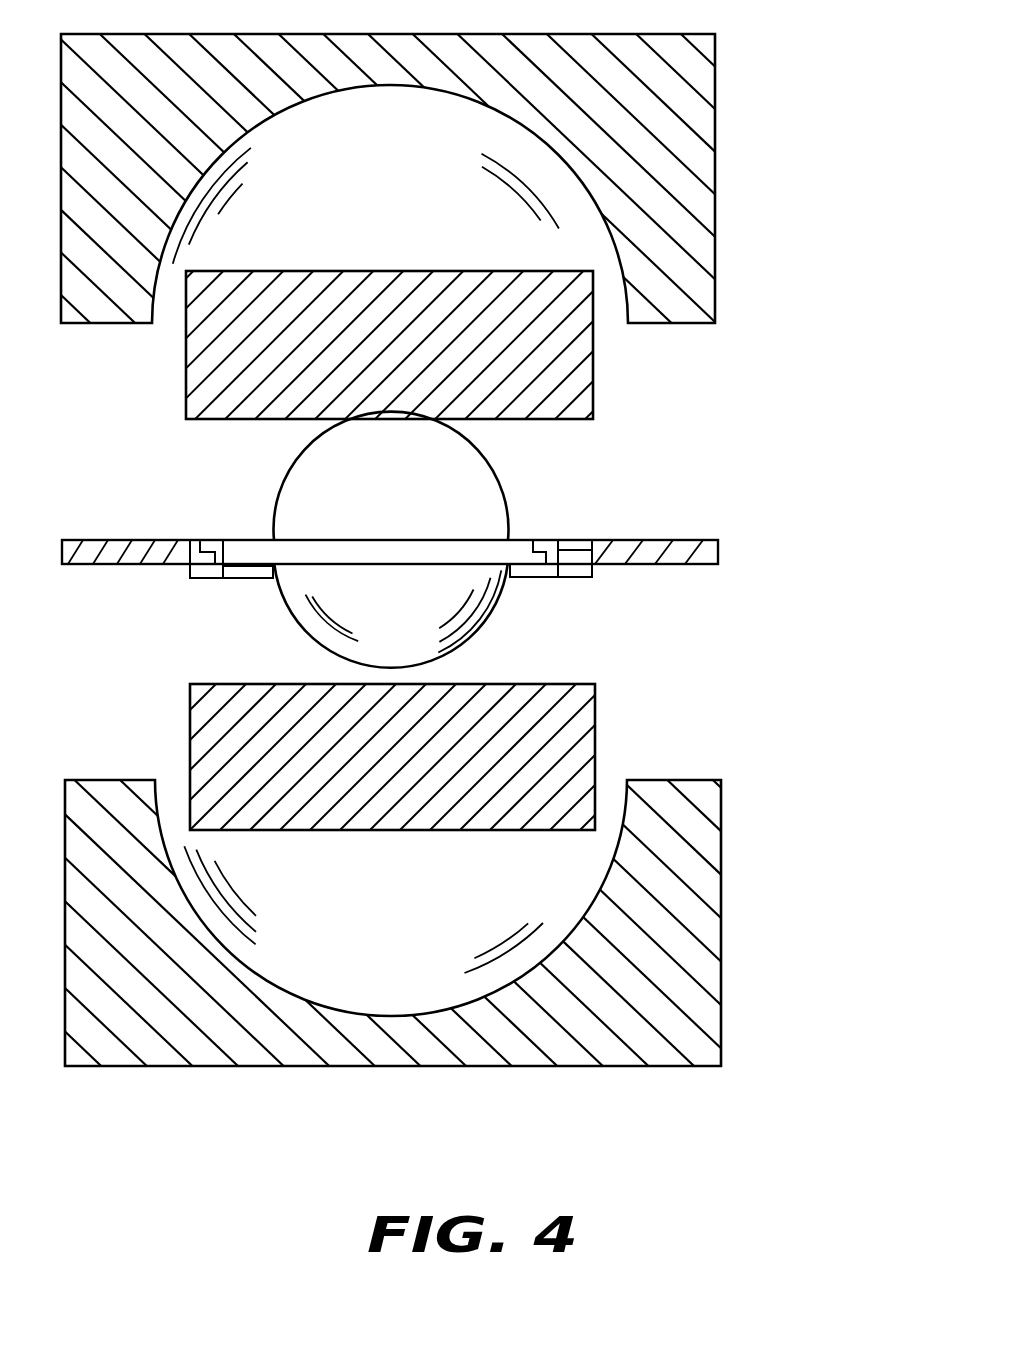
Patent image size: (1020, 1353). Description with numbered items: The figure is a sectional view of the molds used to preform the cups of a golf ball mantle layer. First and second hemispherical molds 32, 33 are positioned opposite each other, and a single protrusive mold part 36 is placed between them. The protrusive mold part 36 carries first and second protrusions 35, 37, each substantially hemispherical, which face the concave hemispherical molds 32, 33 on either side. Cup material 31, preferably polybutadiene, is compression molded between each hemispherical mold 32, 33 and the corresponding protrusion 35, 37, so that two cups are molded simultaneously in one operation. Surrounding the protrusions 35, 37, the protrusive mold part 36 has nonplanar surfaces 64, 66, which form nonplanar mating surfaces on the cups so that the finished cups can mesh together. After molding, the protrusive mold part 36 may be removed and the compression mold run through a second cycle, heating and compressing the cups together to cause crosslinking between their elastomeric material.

The second hemispherical mold 33 is at (716, 184).
The cup material 31 is at (594, 350).
The second protrusion 37 is at (278, 507).
The first hemispherical protrusion 35 is at (282, 600).
The nonplanar surface 66 is at (572, 540).
The nonplanar surface 64 is at (570, 578).
The protrusive mold part 36 is at (749, 541).
The first hemispherical mold 32 is at (722, 888).